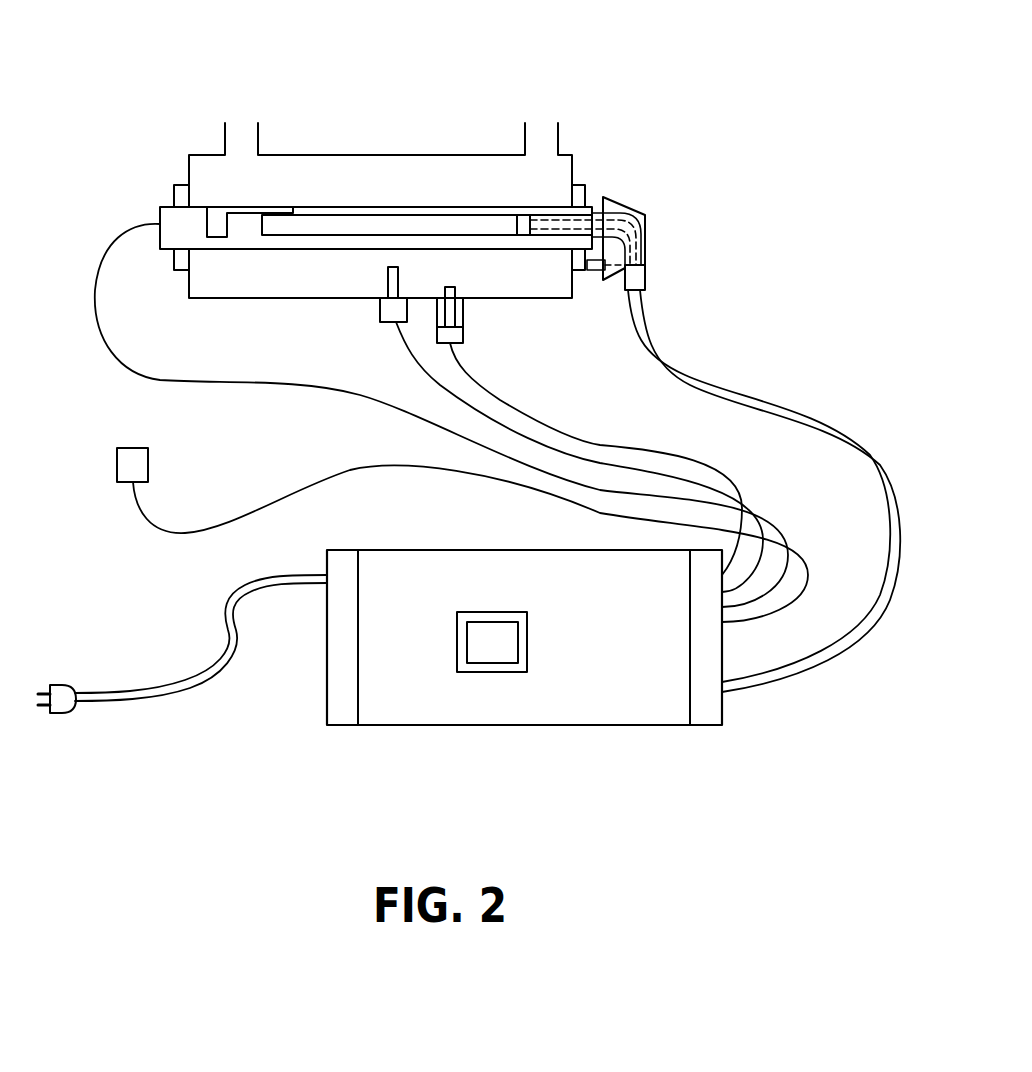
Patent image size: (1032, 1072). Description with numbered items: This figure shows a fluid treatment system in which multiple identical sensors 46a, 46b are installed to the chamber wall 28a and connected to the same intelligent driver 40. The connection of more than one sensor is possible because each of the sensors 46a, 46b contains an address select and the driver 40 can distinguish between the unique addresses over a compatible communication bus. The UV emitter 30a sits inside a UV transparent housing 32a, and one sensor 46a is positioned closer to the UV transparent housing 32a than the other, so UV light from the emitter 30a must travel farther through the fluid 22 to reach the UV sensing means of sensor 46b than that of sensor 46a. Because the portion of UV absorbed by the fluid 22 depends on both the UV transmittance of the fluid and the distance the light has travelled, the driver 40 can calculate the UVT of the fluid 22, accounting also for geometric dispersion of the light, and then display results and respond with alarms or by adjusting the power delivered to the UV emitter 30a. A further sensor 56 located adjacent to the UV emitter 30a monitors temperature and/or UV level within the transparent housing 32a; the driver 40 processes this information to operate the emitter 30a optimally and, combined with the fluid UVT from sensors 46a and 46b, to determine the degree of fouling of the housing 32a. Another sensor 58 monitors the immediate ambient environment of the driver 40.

The fluid 22 is at (240, 127).
The chamber wall 28a is at (311, 155).
The UV transparent housing 32a is at (368, 207).
The UV emitter 30a is at (438, 215).
The sensor 56 is at (247, 213).
The sensor 46a is at (379, 312).
The sensor 46b is at (463, 333).
The sensor 58 is at (148, 467).
The intelligent driver 40 is at (448, 725).